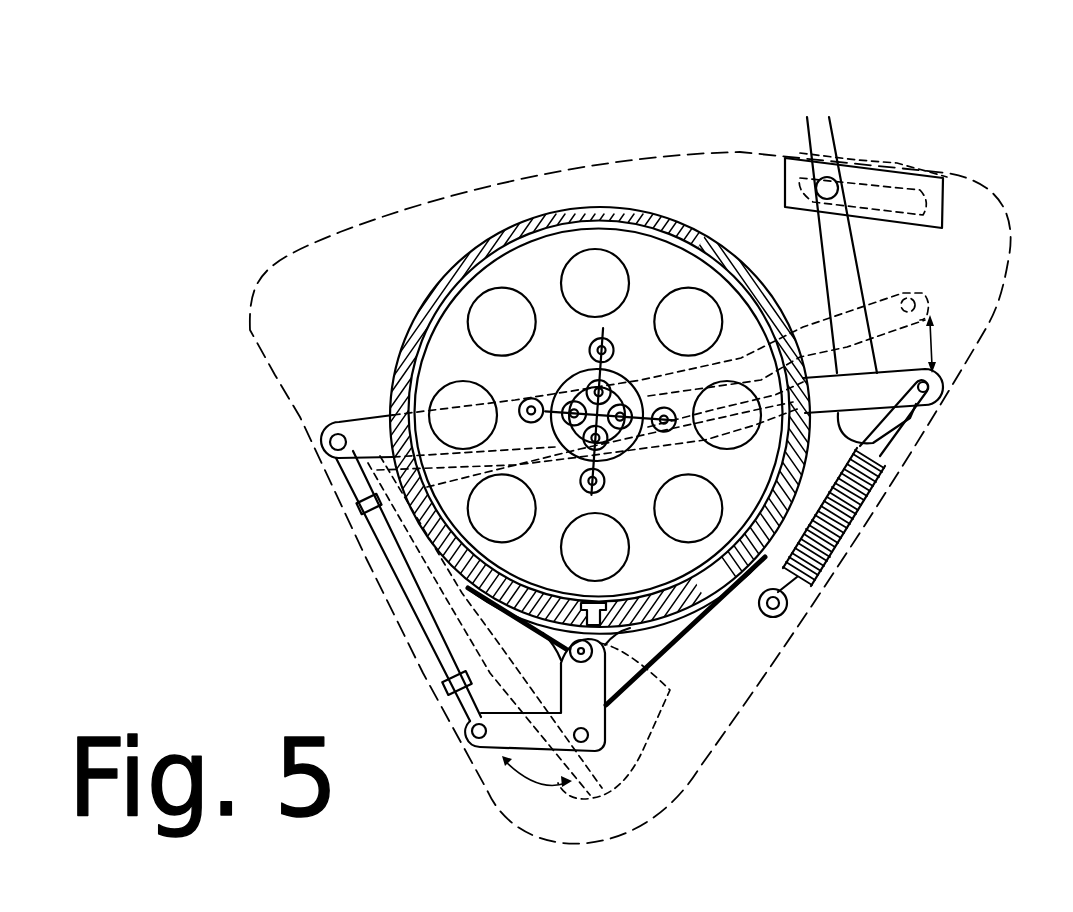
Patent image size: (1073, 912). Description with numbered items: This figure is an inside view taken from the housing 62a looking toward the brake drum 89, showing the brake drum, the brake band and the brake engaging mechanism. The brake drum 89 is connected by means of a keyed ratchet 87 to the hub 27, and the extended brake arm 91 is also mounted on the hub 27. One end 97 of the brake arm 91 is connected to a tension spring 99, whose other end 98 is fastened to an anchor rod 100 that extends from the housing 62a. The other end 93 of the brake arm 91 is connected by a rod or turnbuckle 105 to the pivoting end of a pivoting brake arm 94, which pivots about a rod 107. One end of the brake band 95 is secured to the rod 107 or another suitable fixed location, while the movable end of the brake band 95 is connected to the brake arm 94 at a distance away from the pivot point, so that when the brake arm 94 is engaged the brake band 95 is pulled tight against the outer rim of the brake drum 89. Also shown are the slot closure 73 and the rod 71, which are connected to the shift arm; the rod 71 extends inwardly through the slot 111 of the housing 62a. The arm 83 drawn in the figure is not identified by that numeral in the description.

The hub 27 is at (464, 348).
The housing 62a is at (630, 498).
The rod 71 is at (844, 118).
The slot closure 73 is at (928, 164).
The support arm 83 is at (814, 200).
The keyed ratchet 87 is at (523, 322).
The brake drum 89 is at (599, 344).
The extended brake arm 91 is at (372, 424).
The other end of brake arm 93 is at (299, 499).
The pivoting brake arm 94 is at (495, 723).
The brake band 95 is at (577, 353).
The end of brake arm 97 is at (919, 414).
The other end of tension spring 98 is at (825, 632).
The tension spring 99 is at (862, 486).
The anchor rod 100 is at (825, 673).
The rod or turnbuckle 105 is at (394, 586).
The rod 107 is at (463, 677).
The slot 111 is at (902, 126).